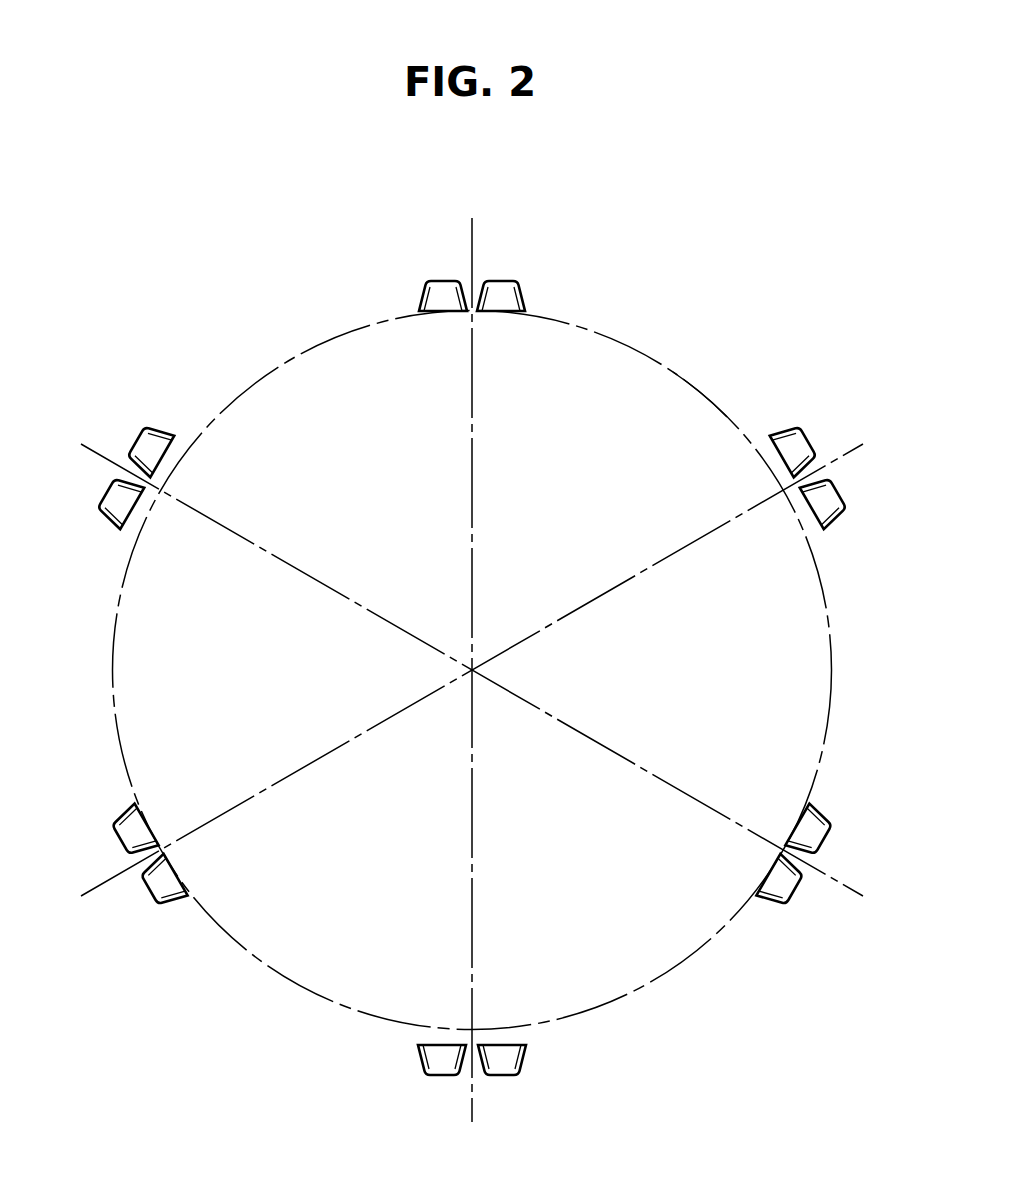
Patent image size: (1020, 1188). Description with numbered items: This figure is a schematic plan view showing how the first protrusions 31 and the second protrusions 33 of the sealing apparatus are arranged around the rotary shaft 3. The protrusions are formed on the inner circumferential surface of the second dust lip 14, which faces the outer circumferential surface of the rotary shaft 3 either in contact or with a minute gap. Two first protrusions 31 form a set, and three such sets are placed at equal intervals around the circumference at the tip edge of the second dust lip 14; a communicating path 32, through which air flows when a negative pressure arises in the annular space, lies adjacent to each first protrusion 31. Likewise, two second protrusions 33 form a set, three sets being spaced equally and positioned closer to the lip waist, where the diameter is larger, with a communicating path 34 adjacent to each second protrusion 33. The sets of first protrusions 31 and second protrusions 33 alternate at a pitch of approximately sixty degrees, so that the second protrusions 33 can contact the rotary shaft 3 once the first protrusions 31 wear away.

The rotary shaft 3 is at (240, 392).
The second dust lip 14 is at (680, 373).
The first protrusion 31 is at (443, 294).
The communicating path 32 is at (414, 306).
The second protrusion 33 is at (152, 446).
The communicating path 34 is at (170, 427).